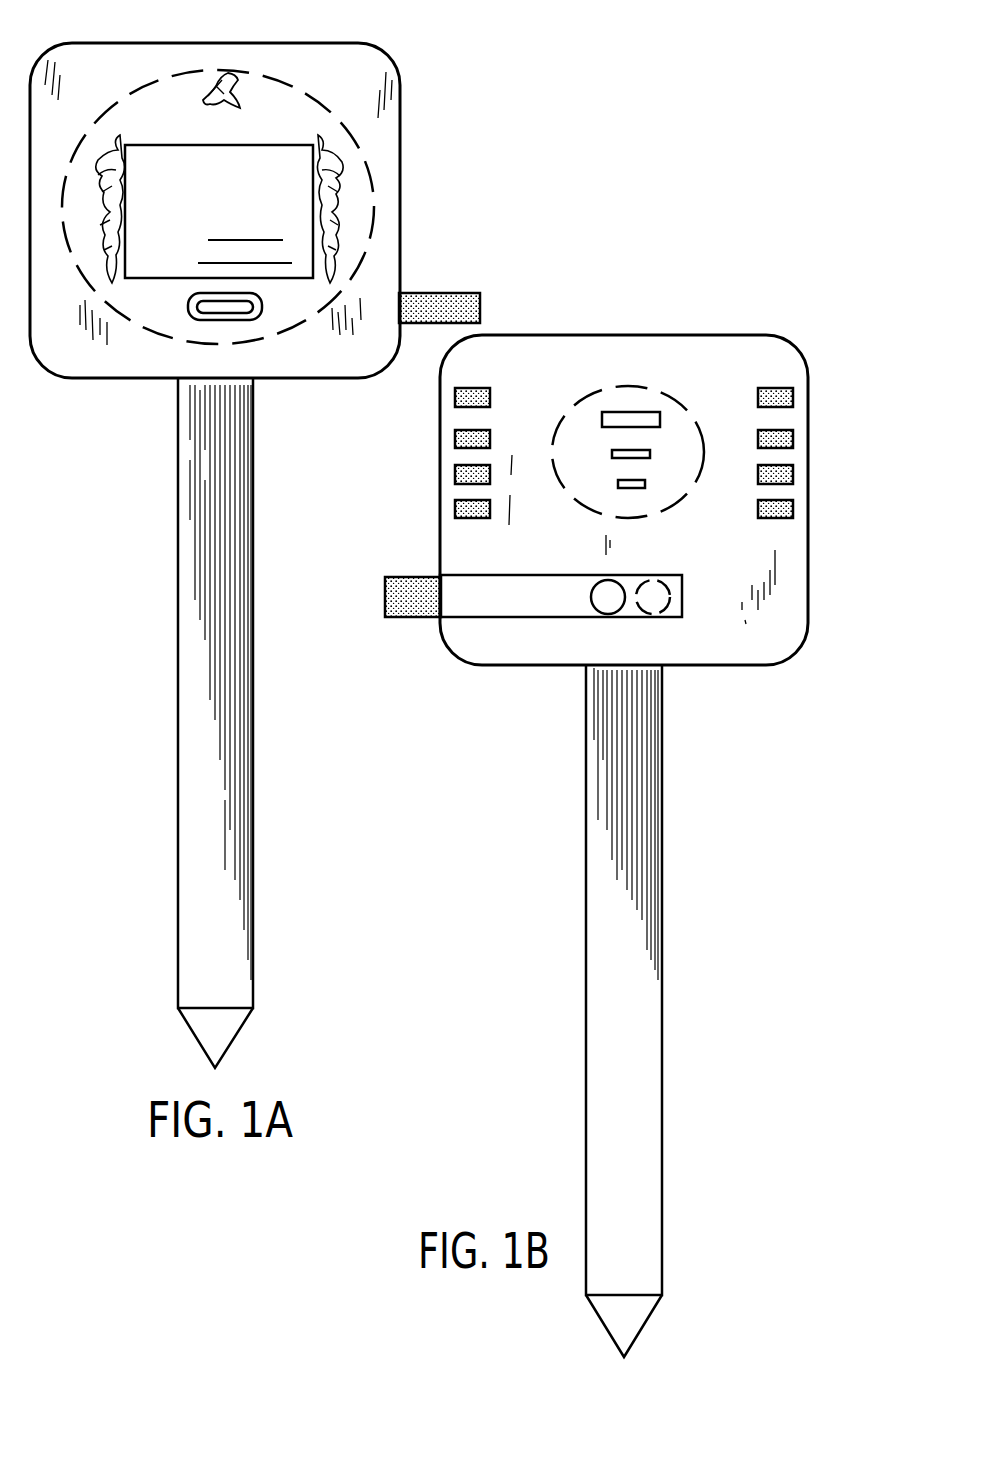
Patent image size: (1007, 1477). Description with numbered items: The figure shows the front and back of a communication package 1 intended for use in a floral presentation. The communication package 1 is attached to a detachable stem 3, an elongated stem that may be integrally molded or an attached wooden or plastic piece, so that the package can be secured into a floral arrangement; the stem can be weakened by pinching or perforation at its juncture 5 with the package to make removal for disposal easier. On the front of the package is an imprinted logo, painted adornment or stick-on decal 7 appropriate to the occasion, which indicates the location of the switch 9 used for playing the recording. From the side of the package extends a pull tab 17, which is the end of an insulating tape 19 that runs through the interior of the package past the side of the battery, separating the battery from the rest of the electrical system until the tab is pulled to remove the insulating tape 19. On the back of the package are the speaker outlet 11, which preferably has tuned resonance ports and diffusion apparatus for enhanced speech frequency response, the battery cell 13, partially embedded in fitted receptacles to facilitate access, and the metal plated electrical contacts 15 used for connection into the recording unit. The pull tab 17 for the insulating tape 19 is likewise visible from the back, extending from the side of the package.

In FIG. 1A, the communication package 1 is at (424, 162).
In FIG. 1B, the communication package 1 is at (633, 272).
In FIG. 1A, the detachable stem 3 is at (187, 674).
In FIG. 1B, the detachable stem 3 is at (610, 842).
In FIG. 1A, the juncture 5 is at (181, 386).
In FIG. 1B, the juncture 5 is at (620, 674).
In FIG. 1A, the stick-on decal 7 is at (236, 74).
In FIG. 1A, the switch 9 is at (252, 318).
In FIG. 1B, the speaker outlet 11 is at (663, 390).
In FIG. 1B, the battery cell 13 is at (610, 600).
In FIG. 1B, the metal plated electrical contacts 15 is at (455, 444).
In FIG. 1A, the pull tab 17 is at (443, 302).
In FIG. 1B, the pull tab 17 is at (404, 590).
In FIG. 1B, the insulating tape 19 is at (498, 597).